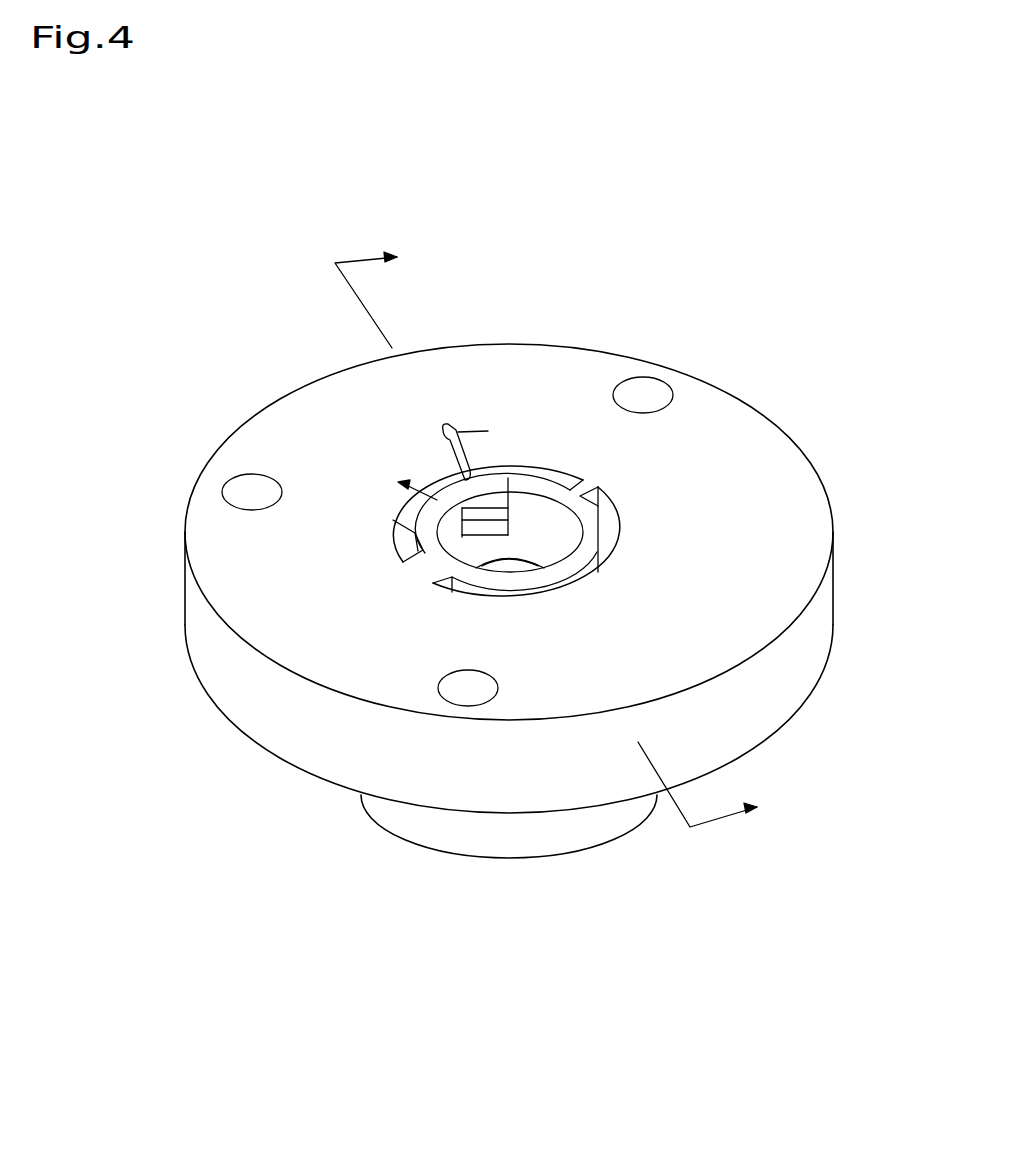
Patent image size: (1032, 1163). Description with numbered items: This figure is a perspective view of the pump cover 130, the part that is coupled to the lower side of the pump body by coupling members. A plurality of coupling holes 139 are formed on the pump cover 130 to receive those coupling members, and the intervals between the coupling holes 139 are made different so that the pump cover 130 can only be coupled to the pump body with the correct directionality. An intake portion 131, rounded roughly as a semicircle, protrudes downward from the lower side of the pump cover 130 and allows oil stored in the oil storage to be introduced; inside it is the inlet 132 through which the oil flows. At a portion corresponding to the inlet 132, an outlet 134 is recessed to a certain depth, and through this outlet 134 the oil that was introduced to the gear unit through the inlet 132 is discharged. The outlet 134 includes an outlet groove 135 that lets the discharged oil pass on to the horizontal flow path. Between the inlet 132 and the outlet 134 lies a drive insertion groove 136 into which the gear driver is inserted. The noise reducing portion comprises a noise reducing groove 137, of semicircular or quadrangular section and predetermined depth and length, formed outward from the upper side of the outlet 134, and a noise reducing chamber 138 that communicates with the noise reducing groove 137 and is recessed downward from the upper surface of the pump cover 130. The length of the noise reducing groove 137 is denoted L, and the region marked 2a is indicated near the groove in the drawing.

The pump cover 130 is at (820, 378).
The intake portion 131 is at (463, 832).
The inlet 132 is at (618, 546).
The outlet 134 is at (396, 522).
The outlet groove 135 is at (498, 492).
The drive insertion groove 136 is at (543, 525).
The noise reducing groove 137 is at (442, 428).
The noise reducing chamber 138 is at (452, 425).
The coupling holes 139 is at (470, 688).
The length of the noise reducing groove L is at (489, 449).
The engaging portion 2a is at (433, 482).